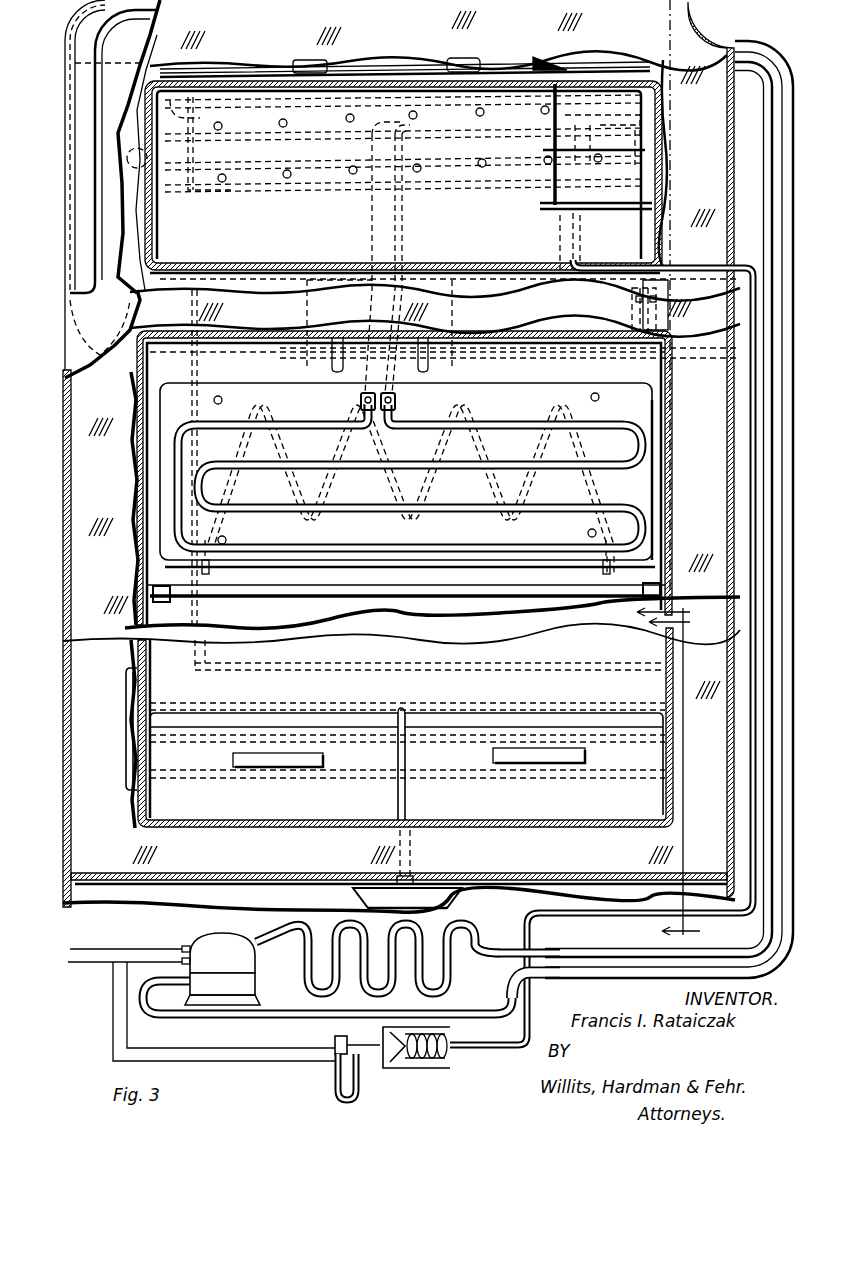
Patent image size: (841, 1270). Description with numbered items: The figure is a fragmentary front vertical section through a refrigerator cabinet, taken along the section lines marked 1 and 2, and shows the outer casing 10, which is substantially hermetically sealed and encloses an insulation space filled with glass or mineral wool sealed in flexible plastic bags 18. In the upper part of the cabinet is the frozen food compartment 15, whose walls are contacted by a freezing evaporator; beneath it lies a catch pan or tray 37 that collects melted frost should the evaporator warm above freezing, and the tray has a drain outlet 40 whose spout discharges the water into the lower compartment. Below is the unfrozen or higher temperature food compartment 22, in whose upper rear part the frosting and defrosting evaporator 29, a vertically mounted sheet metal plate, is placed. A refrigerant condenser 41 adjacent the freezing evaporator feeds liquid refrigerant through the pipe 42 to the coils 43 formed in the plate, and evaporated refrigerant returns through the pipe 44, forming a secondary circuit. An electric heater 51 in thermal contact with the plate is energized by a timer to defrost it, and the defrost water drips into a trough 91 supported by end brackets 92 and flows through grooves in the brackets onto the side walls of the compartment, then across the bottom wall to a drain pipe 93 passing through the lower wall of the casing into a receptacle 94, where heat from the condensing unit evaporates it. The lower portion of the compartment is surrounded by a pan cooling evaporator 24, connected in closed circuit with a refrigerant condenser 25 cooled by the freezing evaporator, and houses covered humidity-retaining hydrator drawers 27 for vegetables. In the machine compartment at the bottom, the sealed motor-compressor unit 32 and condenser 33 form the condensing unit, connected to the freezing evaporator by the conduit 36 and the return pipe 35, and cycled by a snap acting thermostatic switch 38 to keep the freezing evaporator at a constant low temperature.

The outer casing 10 is at (730, 14).
The frozen food compartment 15 is at (445, 211).
The flexible casings or bags 18 is at (132, 690).
The unfrozen food compartment 22 is at (458, 667).
The pan cooling evaporator 24 is at (222, 705).
The refrigerant condenser 25 is at (186, 192).
The hydrator pans or drawers 27 is at (300, 715).
The frosting and defrosting evaporator 29 is at (282, 385).
The sealed motor-compressor unit 32 is at (214, 936).
The condenser 33 is at (306, 978).
The return pipe 35 is at (208, 1016).
The pipe or conduit 36 is at (603, 950).
The catch pan or tray 37 is at (570, 270).
The snap acting thermostatic switch 38 is at (443, 1070).
The drain outlet 40 is at (632, 312).
The refrigerant condenser 41 is at (368, 205).
The pipe 42 is at (360, 397).
The coils 43 is at (525, 418).
The pipe 44 is at (408, 247).
The electric heater 51 is at (455, 400).
The trough 91 is at (320, 592).
The end brackets 92 is at (155, 590).
The drain pipe 93 is at (412, 855).
The receptacle 94 is at (357, 903).
The section line 1- 1 is at (655, 618).
The section line 2- 2 is at (682, 776).